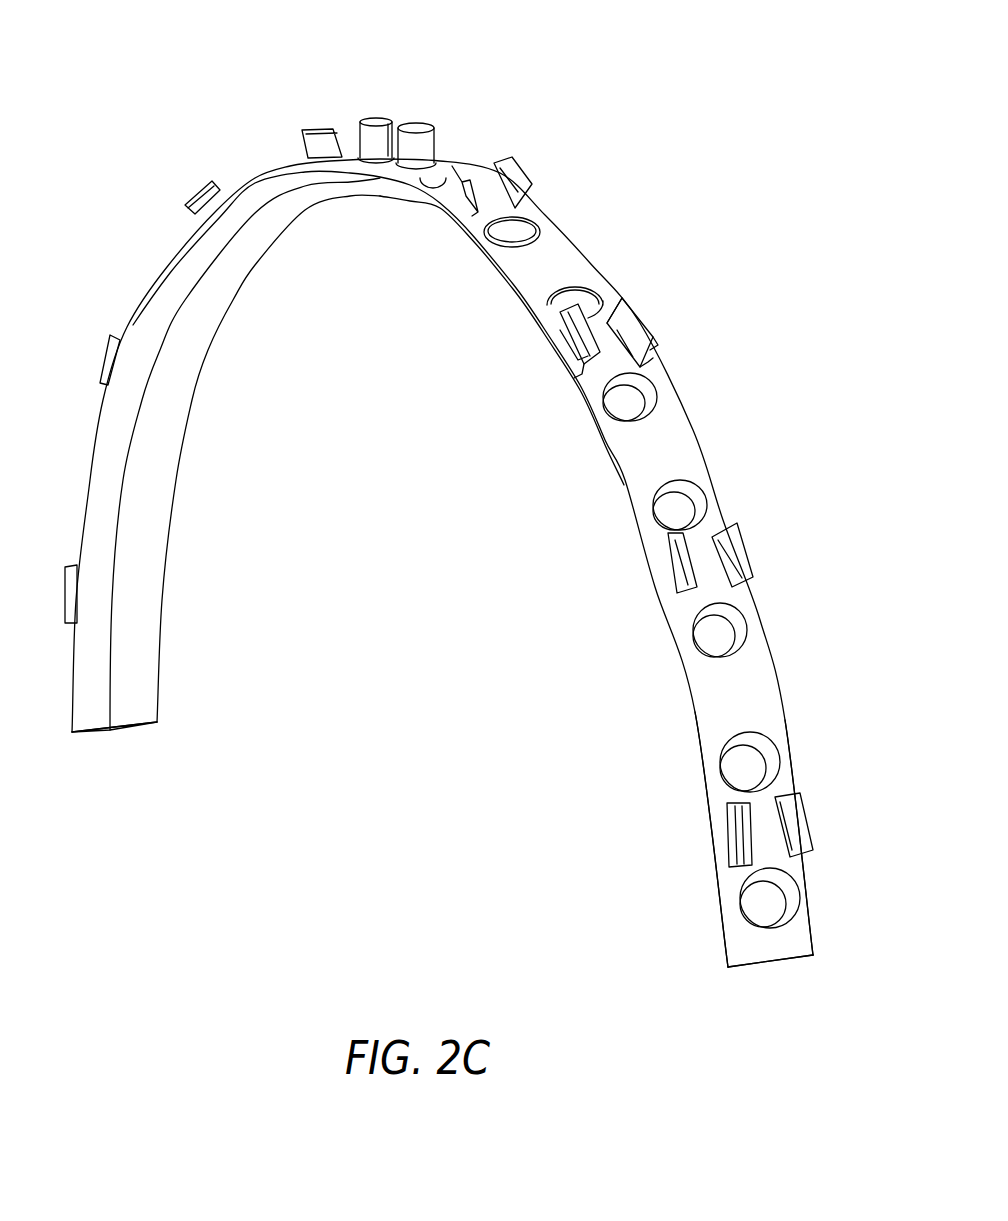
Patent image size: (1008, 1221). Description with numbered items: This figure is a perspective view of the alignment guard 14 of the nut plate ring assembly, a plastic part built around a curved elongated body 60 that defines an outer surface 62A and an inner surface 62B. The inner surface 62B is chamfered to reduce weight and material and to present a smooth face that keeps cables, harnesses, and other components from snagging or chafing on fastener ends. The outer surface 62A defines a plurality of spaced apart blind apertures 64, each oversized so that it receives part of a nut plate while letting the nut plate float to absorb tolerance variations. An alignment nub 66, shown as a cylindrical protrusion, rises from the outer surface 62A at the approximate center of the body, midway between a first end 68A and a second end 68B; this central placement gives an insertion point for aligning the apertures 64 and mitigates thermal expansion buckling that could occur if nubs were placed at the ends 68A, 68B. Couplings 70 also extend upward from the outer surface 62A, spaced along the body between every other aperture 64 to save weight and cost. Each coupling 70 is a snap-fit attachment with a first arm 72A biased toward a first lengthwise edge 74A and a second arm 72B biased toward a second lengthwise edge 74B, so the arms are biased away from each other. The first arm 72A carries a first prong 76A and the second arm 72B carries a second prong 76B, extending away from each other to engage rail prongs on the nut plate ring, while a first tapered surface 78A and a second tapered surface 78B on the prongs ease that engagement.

The alignment guard 14 is at (633, 67).
The curved elongated body 60 is at (190, 350).
The outer surface 62A is at (570, 257).
The inner surface 62B is at (250, 255).
The apertures 64 is at (667, 394).
The alignment nub 66 is at (417, 125).
The first end 68A is at (120, 727).
The second end 68B is at (780, 963).
The couplings 70 is at (527, 150).
The first arm 72A is at (581, 377).
The second arm 72B is at (653, 358).
The first lengthwise edge 74A is at (693, 712).
The second lengthwise edge 74B is at (780, 683).
The first prong 76A is at (577, 363).
The second prong 76B is at (652, 343).
The first tapered surface 78A is at (563, 317).
The second tapered surface 78B is at (632, 308).